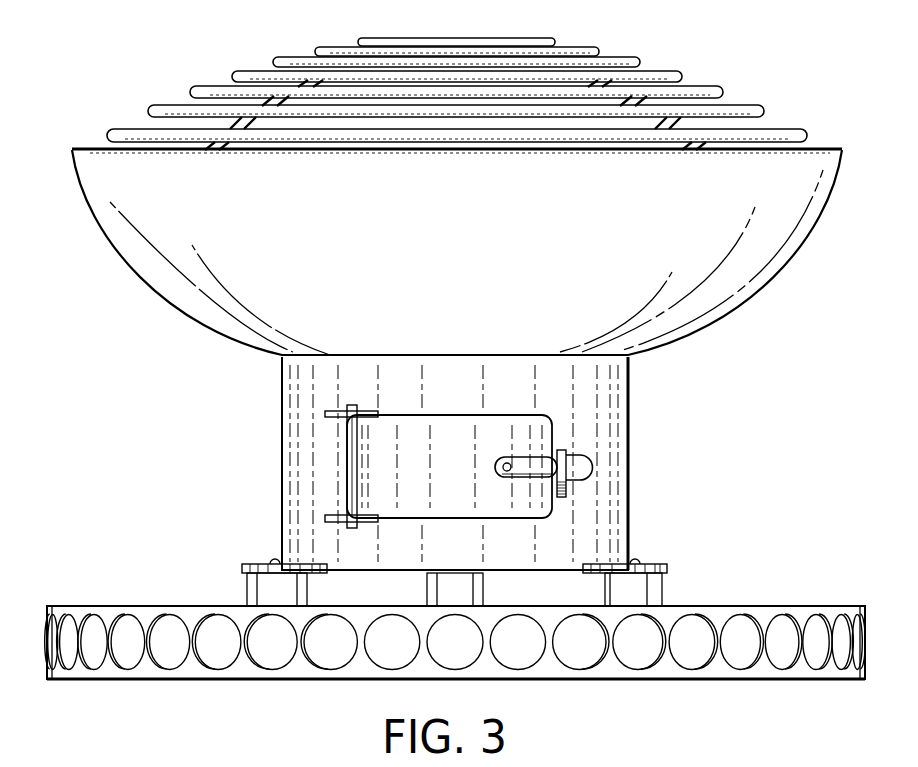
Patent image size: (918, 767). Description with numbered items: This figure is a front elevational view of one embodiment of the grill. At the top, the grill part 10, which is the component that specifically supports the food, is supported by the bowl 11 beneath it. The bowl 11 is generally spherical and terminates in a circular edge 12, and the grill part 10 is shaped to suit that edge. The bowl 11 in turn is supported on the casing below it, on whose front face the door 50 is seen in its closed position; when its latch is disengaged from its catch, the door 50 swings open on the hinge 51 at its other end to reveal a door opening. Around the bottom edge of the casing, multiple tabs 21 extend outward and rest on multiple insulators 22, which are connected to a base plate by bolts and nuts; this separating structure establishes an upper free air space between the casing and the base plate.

The grill part 10 is at (313, 50).
The bowl 11 is at (103, 230).
The circular edge 12 is at (88, 148).
The tabs 21 is at (658, 564).
The insulators 22 is at (663, 588).
The door 50 is at (458, 415).
The hinge 51 is at (348, 417).